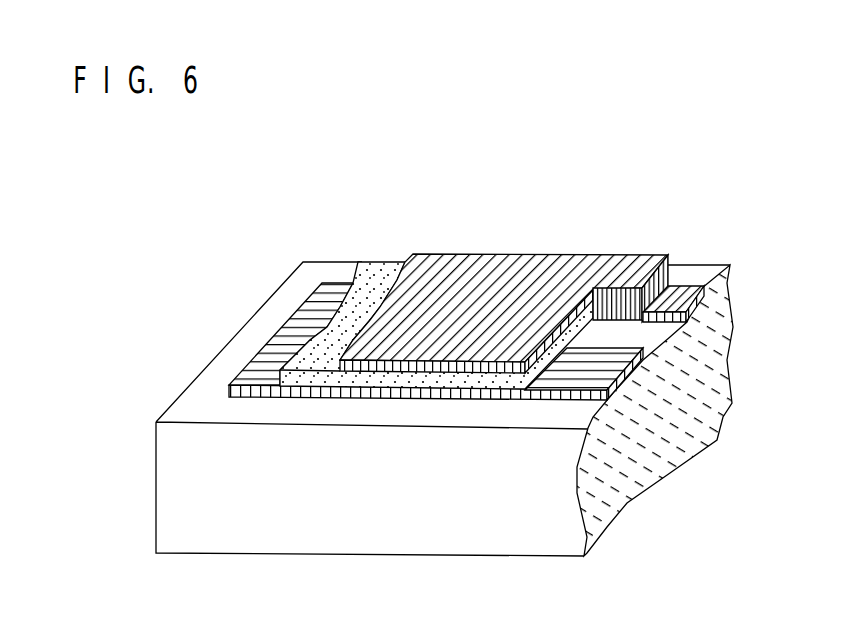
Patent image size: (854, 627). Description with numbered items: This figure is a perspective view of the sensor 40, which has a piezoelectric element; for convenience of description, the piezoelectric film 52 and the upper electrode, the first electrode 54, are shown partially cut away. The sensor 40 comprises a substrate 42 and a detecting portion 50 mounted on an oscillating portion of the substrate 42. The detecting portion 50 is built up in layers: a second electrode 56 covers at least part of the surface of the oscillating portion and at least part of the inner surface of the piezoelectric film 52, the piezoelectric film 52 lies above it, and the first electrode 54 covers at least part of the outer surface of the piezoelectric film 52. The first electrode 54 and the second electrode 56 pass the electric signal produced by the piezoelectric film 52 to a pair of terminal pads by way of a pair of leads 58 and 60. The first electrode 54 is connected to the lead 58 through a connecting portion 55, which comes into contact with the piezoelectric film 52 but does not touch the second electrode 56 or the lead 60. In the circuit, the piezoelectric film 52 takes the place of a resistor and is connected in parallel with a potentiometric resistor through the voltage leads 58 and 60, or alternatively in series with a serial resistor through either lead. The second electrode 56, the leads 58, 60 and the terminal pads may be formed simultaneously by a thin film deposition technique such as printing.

The sensor 40 is at (267, 239).
The substrate 42 is at (240, 527).
The detecting portion 50 is at (511, 297).
The piezoelectric film 52 is at (386, 274).
The first electrode 54 is at (464, 275).
The connecting portion 55 is at (668, 272).
The second electrode 56 is at (314, 296).
The lead 58 is at (703, 287).
The lead 60 is at (552, 377).